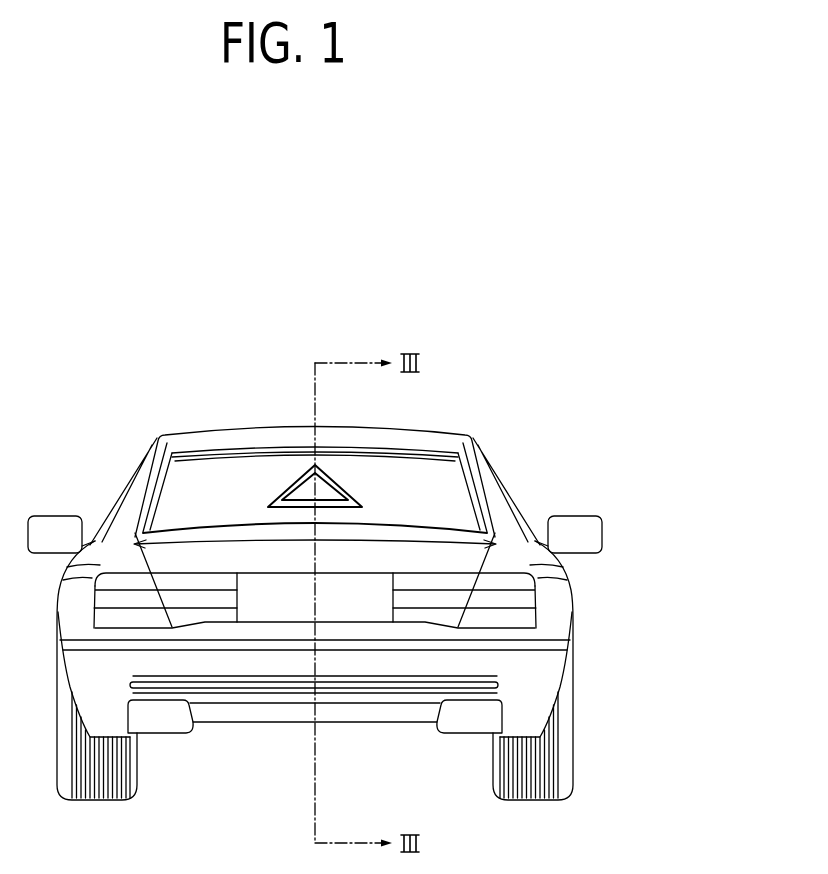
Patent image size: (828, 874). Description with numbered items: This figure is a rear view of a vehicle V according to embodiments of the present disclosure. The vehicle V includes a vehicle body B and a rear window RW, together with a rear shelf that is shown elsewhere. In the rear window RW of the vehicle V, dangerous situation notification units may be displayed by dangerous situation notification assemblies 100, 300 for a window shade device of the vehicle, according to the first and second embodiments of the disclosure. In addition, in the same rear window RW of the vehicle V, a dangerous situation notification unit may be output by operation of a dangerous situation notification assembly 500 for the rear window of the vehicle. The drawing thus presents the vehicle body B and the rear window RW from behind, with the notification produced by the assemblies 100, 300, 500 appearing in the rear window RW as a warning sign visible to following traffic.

The vehicle V is at (158, 403).
The rear window RW is at (242, 468).
The vehicle body B is at (150, 477).
The dangerous situation notification assembly 100 is at (338, 488).
The dangerous situation notification assembly 300 is at (315, 486).
The dangerous situation notification assembly 500 is at (315, 486).